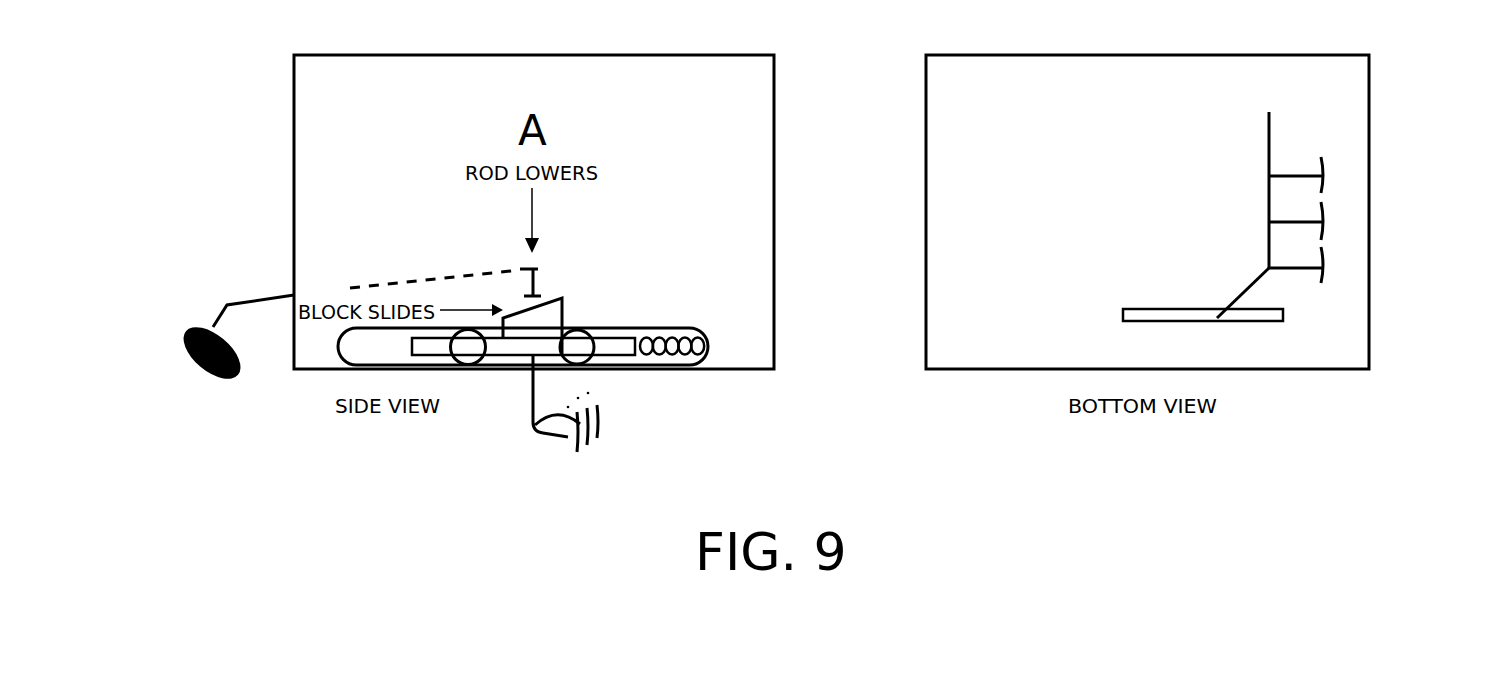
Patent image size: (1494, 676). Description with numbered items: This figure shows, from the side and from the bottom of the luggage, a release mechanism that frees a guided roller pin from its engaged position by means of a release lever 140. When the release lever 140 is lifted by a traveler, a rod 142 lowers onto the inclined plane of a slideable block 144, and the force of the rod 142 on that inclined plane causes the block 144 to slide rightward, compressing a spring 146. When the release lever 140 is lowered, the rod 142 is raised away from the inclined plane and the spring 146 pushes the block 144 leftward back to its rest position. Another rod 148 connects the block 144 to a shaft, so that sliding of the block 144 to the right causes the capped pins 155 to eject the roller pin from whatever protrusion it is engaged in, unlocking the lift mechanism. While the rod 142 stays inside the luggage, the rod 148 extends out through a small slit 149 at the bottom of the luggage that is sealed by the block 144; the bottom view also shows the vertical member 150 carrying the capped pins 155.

The release lever 140 is at (183, 345).
The rod 142 is at (365, 288).
The slideable block 144 is at (565, 312).
The spring 146 is at (662, 334).
The rod 148 is at (528, 378).
The slit 149 is at (1167, 308).
The vertical rod 150 is at (540, 440).
The capped pins 155 is at (600, 422).